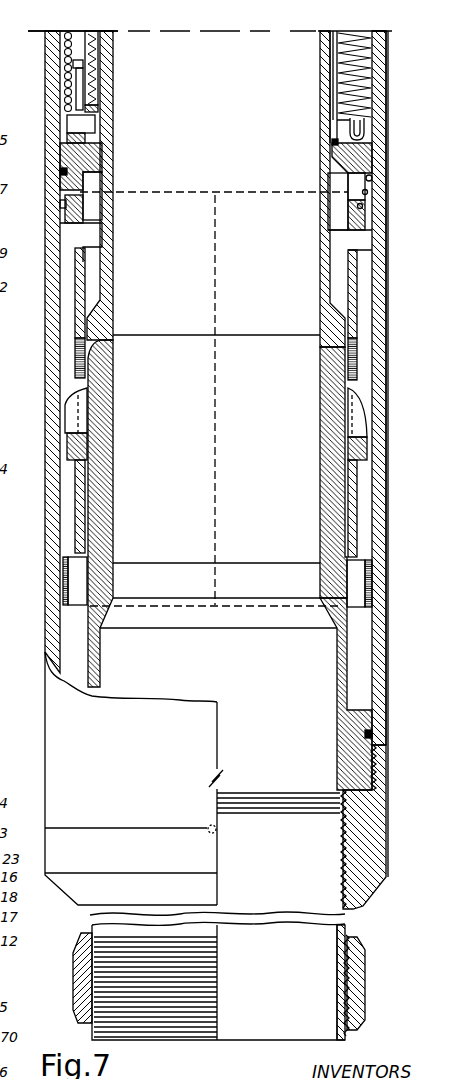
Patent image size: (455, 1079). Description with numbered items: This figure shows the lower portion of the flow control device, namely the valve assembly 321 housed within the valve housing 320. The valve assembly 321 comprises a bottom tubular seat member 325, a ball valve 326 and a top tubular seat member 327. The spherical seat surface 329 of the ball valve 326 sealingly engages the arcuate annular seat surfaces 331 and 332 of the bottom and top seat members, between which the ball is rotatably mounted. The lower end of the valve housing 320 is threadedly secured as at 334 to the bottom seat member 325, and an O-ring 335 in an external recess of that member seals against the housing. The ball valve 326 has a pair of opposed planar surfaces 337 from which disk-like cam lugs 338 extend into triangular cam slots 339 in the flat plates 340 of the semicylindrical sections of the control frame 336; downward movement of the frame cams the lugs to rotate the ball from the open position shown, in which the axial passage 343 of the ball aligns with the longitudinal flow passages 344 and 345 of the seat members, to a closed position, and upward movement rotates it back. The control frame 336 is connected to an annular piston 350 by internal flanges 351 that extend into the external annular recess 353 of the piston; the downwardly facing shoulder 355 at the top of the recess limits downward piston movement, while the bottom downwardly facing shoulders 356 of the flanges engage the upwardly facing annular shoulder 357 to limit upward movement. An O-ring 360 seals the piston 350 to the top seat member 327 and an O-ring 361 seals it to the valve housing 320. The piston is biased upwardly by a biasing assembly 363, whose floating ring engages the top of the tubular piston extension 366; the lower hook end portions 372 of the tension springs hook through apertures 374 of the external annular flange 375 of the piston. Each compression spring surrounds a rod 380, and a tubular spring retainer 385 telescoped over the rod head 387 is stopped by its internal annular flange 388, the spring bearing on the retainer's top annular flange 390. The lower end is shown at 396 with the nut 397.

The valve housing 320 is at (378, 604).
The valve assembly 321 is at (388, 358).
The bottom tubular seat member 325 is at (345, 685).
The ball valve 326 is at (330, 520).
The top tubular seat member 327 is at (355, 266).
The spherical seat surface 329 is at (340, 550).
The arcuate annular seat surface 331 is at (100, 560).
The arcuate annular seat surface 332 is at (115, 347).
The threaded connection 334 is at (380, 806).
The O-ring 335 is at (370, 735).
The control frame 336 is at (74, 297).
The planar surfaces 337 is at (73, 410).
The cam lugs 338 is at (70, 440).
The cam slots 339 is at (350, 385).
The flat plates 340 is at (352, 302).
The axial passage 343 is at (213, 347).
The longitudinal flow passage 344 is at (262, 585).
The longitudinal flow passage 345 is at (120, 272).
The annular piston 350 is at (360, 145).
The internal flanges 351 is at (338, 214).
The external annular recess 353 is at (362, 197).
The downwardly facing shoulder 355 is at (367, 180).
The bottom downwardly facing shoulders 356 is at (363, 223).
The upwardly facing annular shoulder 357 is at (70, 203).
The O-ring 360 is at (332, 143).
The O-ring 361 is at (369, 165).
The biasing assembly 363 is at (370, 40).
The tubular piston extension 366 is at (333, 60).
The lower hook end portions 372 is at (360, 122).
The apertures 374 is at (343, 125).
The external annular flange 375 is at (68, 126).
The rod 380 is at (78, 31).
The tubular spring retainer 385 is at (97, 80).
The rod head 387 is at (76, 64).
The internal annular flange 388 is at (66, 42).
The top annular flange 390 is at (90, 108).
The lower body 396 is at (347, 926).
The nut 397 is at (365, 976).